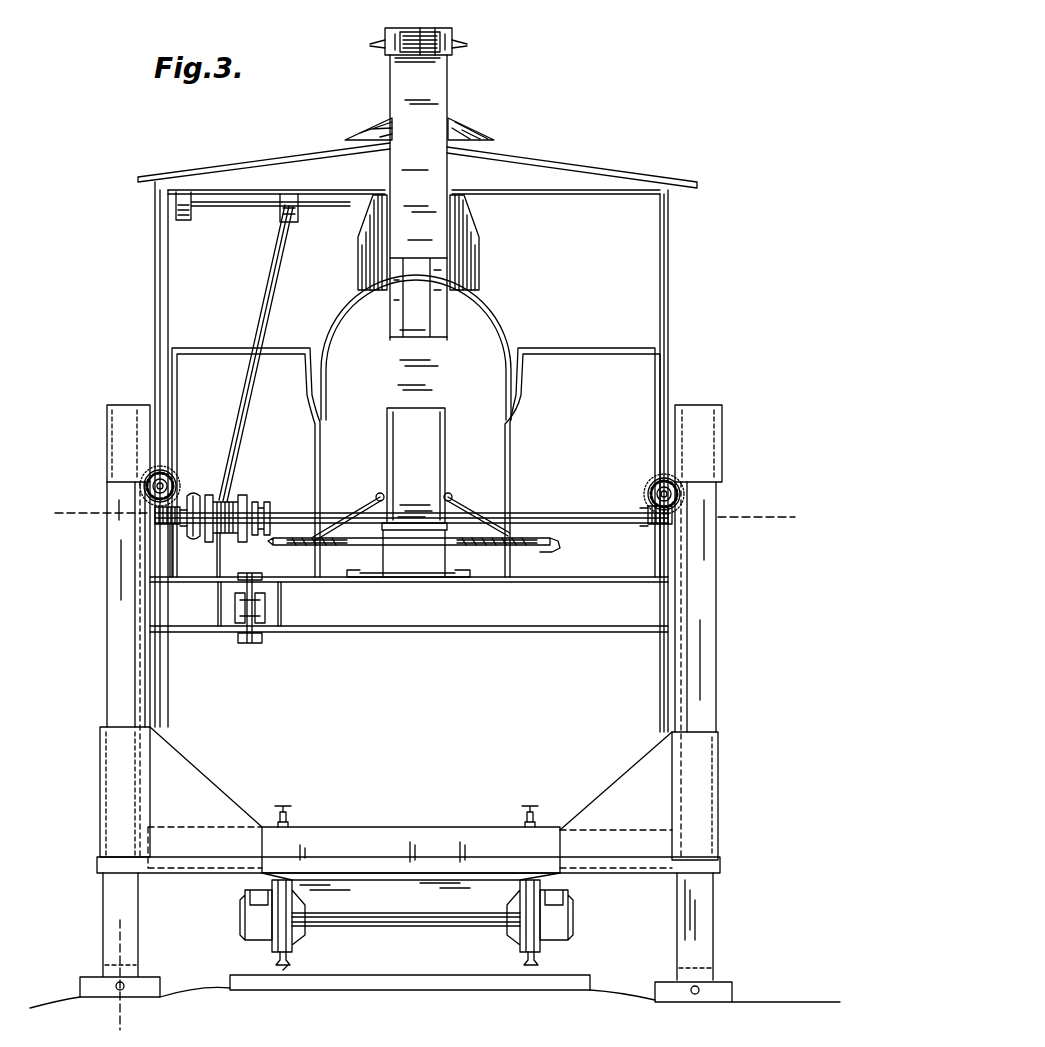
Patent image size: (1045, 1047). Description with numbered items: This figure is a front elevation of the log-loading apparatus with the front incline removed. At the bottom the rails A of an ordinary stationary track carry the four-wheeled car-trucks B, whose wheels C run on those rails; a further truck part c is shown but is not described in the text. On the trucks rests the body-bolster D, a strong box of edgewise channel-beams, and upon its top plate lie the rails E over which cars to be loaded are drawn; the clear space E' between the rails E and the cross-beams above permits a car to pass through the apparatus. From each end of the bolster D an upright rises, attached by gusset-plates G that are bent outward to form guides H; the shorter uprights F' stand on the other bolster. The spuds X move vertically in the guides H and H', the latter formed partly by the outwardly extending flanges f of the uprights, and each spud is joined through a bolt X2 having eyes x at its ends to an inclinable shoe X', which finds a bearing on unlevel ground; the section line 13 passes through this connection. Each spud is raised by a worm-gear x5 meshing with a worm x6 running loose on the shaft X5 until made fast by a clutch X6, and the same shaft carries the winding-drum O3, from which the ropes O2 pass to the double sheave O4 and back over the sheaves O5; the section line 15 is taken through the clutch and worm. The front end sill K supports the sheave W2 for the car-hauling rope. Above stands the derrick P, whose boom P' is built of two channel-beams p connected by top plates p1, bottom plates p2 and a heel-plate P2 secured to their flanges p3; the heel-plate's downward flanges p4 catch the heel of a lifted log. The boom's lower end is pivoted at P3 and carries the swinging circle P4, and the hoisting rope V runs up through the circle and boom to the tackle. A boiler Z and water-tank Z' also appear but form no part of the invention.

The derrick P is at (436, 197).
The boom P' is at (419, 111).
The heel-plate P2 is at (414, 468).
The pivot support of boom P3 is at (466, 582).
The swinging circle P4 is at (532, 562).
The channel-beams of boom p is at (398, 30).
The top plates p1 is at (437, 30).
The bottom plates p2 is at (412, 62).
The flanges of boom channel-beams p3 is at (370, 44).
The flanges of heel-plate p4 is at (388, 450).
The hoisting rope V is at (418, 297).
The boiler Z is at (417, 437).
The water-tank Z' is at (582, 444).
The space between rails and cross-beams E' is at (305, 523).
The ropes O2 is at (262, 286).
The winding-drum O3 is at (245, 495).
The double sheave O4 is at (298, 215).
The sheaves O5 is at (192, 215).
The spuds X is at (403, 671).
The shoe X' is at (435, 940).
The bolt X2 is at (715, 962).
The shaft X5 is at (543, 512).
The clutch X6 is at (232, 470).
The eye of bolt x is at (92, 985).
The worm-gear x5 is at (178, 490).
The worm x6 is at (176, 530).
The guides H is at (414, 800).
The guides H' is at (418, 443).
The flanges of upright f is at (135, 640).
The uprights F' is at (409, 461).
The end sill K is at (409, 604).
The sheave W2 is at (252, 643).
The gusset-plates G is at (410, 797).
The body-bolster D is at (411, 835).
The rails E is at (408, 803).
The wheels C is at (262, 945).
The truck frame c is at (411, 893).
The rails of stationary track A is at (300, 962).
The car-trucks B is at (246, 906).
The section line 13 13 is at (121, 977).
The section line 15 15 is at (419, 514).